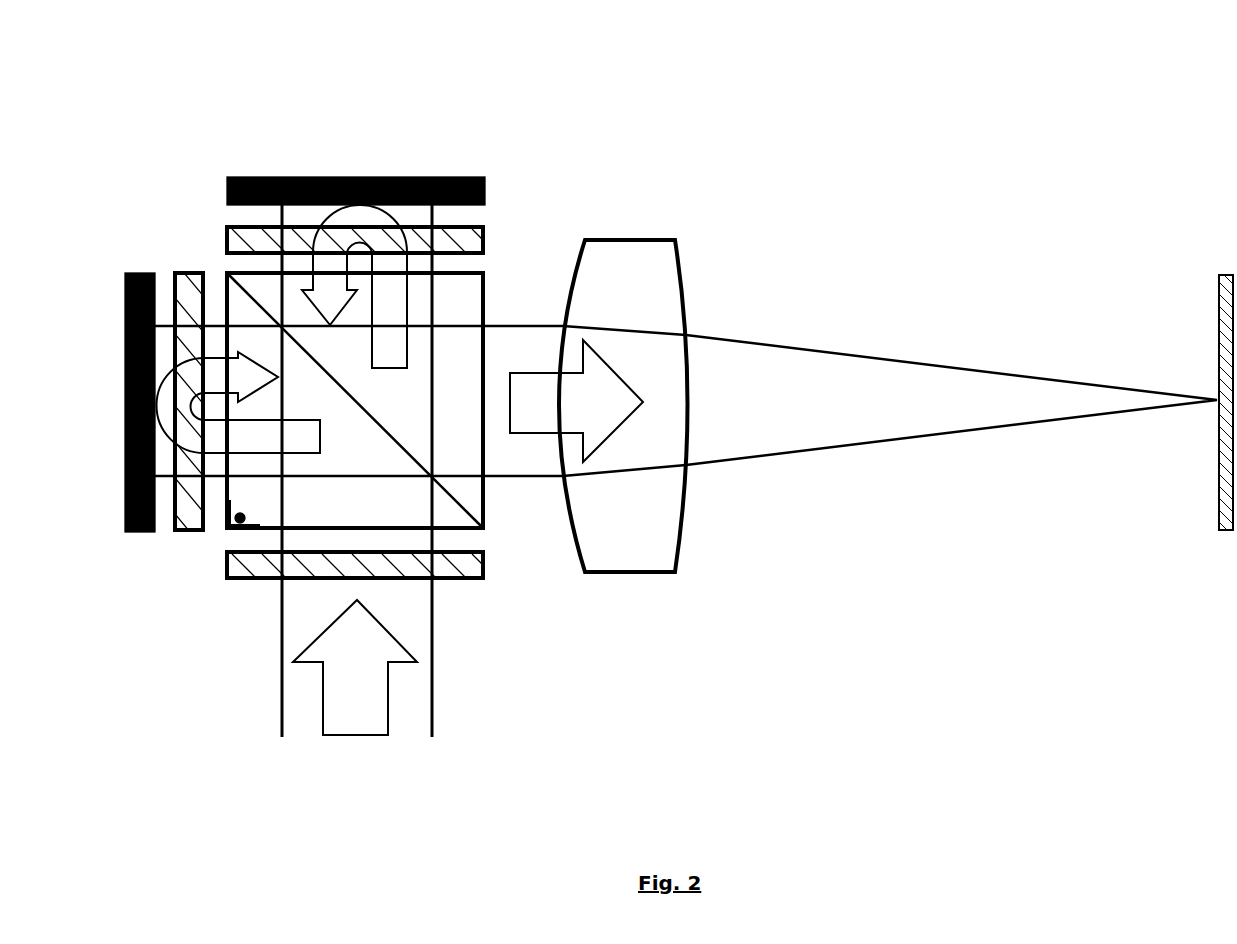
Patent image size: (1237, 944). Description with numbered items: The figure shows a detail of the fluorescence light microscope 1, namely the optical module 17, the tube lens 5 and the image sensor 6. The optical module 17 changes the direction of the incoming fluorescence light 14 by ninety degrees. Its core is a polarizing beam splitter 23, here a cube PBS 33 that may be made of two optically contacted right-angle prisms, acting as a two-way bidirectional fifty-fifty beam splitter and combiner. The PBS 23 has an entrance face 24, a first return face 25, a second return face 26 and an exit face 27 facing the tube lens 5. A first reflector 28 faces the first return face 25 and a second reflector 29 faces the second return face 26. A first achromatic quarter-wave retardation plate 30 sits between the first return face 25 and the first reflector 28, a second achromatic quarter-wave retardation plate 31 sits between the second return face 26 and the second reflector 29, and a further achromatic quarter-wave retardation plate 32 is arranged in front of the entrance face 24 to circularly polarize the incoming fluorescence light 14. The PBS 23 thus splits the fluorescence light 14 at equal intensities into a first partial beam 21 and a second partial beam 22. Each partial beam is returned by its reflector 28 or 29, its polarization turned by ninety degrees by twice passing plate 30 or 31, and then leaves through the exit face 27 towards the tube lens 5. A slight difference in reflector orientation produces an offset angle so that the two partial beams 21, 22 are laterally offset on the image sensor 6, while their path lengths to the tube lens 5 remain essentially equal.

The fluorescence light microscope 1 is at (957, 612).
The tube lens 5 is at (631, 225).
The image sensor 6 is at (1206, 269).
The fluorescence light 14 is at (277, 689).
The optical module 17 is at (505, 128).
The first partial beam 21 is at (216, 322).
The second partial beam 22 is at (276, 217).
The polarizing beam splitter 23 is at (227, 535).
The entrance face 24 is at (468, 539).
The first return face 25 is at (224, 516).
The second return face 26 is at (485, 268).
The exit face 27 is at (487, 300).
The first reflector 28 is at (137, 270).
The second reflector 29 is at (488, 185).
The first achromatic quarter-wave retardation plate 30 is at (183, 270).
The second achromatic quarter-wave retardation plate 31 is at (488, 233).
The further achromatic quarter-wave retardation plate 32 is at (229, 582).
The cube PBS 33 is at (227, 535).